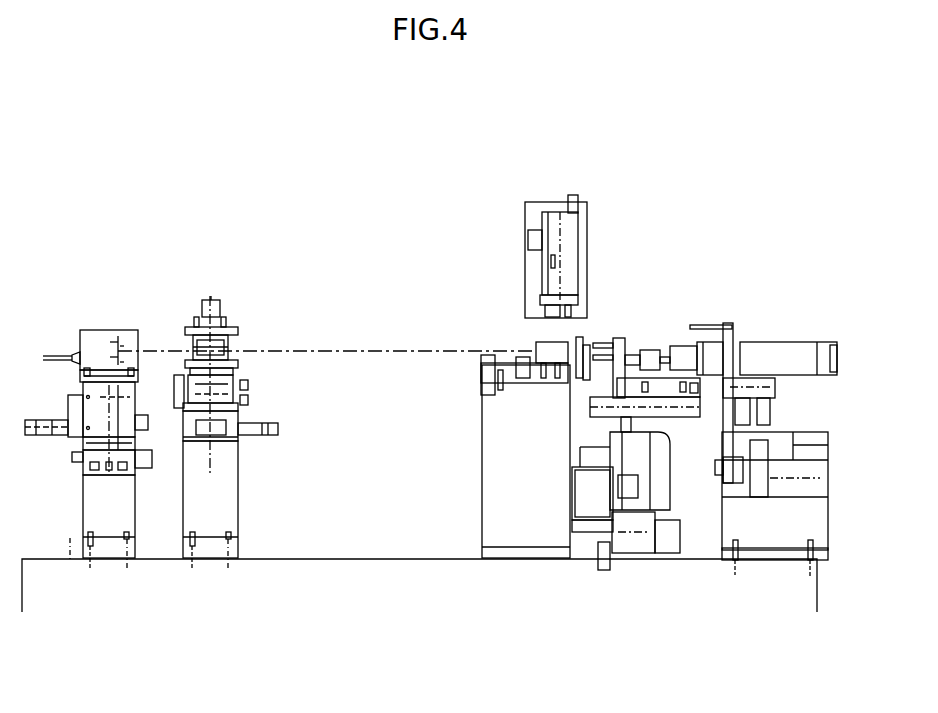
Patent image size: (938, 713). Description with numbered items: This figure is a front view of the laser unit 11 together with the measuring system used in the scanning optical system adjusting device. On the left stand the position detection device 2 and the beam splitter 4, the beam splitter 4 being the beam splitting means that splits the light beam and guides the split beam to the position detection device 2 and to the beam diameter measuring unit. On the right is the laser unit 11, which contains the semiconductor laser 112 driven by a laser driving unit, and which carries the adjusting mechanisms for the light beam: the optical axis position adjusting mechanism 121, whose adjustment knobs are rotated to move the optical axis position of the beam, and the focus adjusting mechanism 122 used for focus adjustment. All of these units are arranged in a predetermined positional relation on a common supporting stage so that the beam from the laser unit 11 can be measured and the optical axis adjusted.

The position detection device 2 is at (80, 586).
The beam splitter 4 is at (210, 538).
The laser unit 11 is at (688, 598).
The semiconductor laser 112 is at (553, 356).
The optical axis position adjusting mechanism 121 is at (645, 363).
The focus adjusting mechanism 122 is at (563, 245).